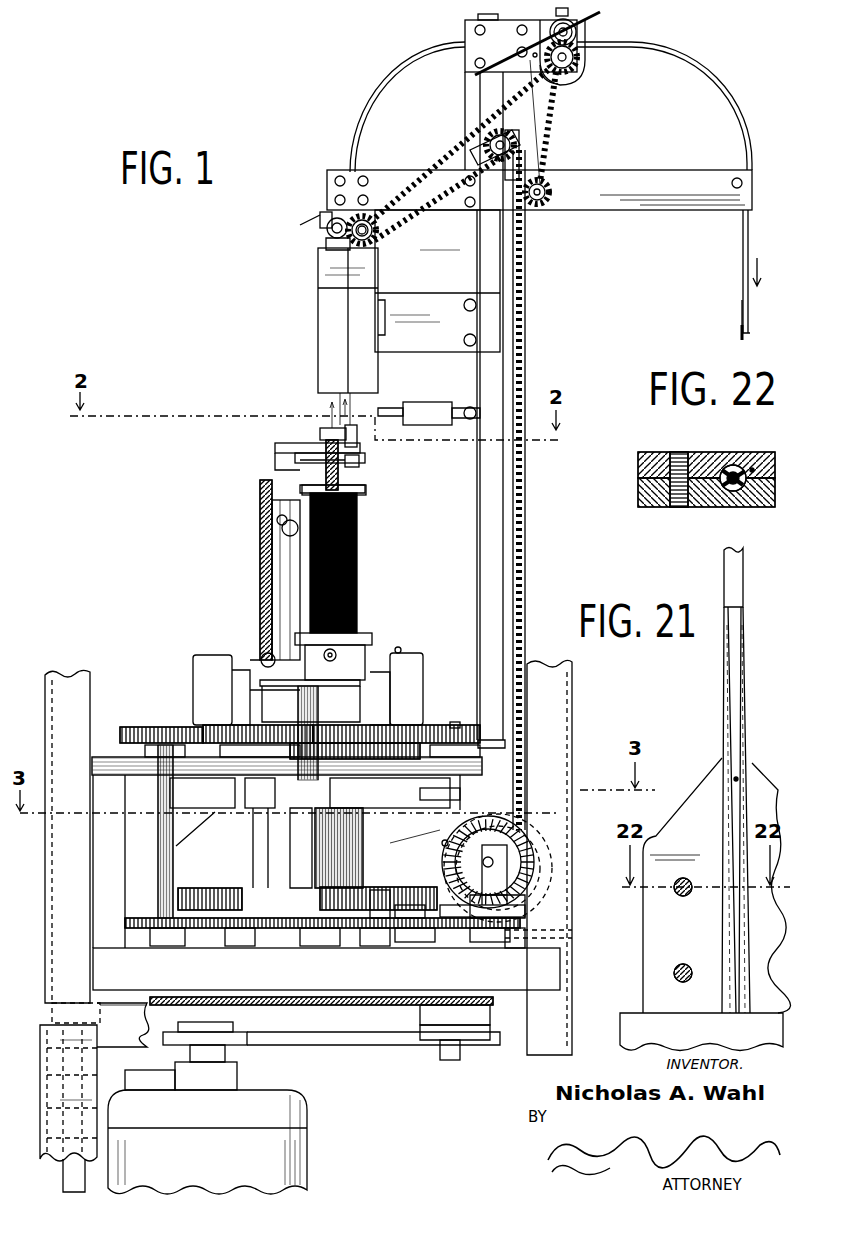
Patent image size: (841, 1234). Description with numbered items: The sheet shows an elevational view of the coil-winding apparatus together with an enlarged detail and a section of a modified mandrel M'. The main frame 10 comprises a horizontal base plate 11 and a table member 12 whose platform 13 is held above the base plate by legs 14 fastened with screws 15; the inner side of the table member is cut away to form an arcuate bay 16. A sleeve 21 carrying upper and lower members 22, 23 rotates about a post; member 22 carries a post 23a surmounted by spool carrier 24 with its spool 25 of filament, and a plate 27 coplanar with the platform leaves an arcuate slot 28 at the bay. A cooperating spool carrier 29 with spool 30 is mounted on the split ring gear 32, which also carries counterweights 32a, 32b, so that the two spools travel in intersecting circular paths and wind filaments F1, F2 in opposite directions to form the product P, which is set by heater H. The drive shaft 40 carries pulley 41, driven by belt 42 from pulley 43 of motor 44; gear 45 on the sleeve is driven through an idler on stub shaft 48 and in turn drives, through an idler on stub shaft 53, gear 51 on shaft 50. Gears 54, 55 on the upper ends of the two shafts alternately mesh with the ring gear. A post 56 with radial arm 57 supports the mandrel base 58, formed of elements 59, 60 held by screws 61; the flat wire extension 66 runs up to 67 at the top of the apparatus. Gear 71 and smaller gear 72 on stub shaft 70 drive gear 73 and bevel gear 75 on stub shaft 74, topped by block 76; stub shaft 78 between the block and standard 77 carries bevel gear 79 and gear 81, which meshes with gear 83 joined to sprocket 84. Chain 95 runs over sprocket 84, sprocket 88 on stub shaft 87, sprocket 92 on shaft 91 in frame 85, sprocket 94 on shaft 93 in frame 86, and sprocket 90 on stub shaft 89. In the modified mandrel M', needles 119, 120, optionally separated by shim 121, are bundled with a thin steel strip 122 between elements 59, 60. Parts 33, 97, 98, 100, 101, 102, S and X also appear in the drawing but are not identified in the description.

In FIG. 1, the main frame 10 is at (80, 911).
In FIG. 1, the base plate 11 is at (362, 984).
In FIG. 1, the table member 12 is at (107, 748).
In FIG. 1, the platform 13 is at (115, 756).
In FIG. 1, the legs 14 is at (106, 848).
In FIG. 1, the screws 15 is at (128, 1010).
In FIG. 1, the arcuate bay 16 is at (418, 792).
In FIG. 1, the sleeve 21 is at (262, 858).
In FIG. 1, the upper member 22 is at (205, 812).
In FIG. 1, the lower member 23 is at (212, 895).
In FIG. 1, the post 23a is at (304, 812).
In FIG. 1, the spool carrier 24 is at (350, 676).
In FIG. 1, the spool of filament 25 is at (357, 579).
In FIG. 1, the plate 27 is at (269, 784).
In FIG. 1, the arcuate slot 28 is at (206, 784).
In FIG. 1, the cooperating spool carrier 29 is at (257, 651).
In FIG. 1, the spool 30 is at (357, 560).
In FIG. 1, the split ring gear 32 is at (252, 738).
In FIG. 1, the counterweight 32a is at (404, 668).
In FIG. 1, the counterweight 32b is at (210, 668).
In FIG. 1, the gear 33 is at (426, 727).
In FIG. 1, the drive shaft 40 is at (440, 725).
In FIG. 1, the pulley 41 is at (430, 1040).
In FIG. 1, the belt 42 is at (322, 1045).
In FIG. 1, the pulley 43 is at (248, 1042).
In FIG. 1, the motor 44 is at (290, 1150).
In FIG. 1, the gear 45 is at (332, 948).
In FIG. 1, the stub shaft 48 is at (372, 942).
In FIG. 1, the shaft 50 is at (168, 727).
In FIG. 1, the gear 51 is at (158, 924).
In FIG. 1, the stub shaft 53 is at (250, 950).
In FIG. 1, the gear 54 is at (452, 722).
In FIG. 1, the gear 55 is at (156, 740).
In FIG. 1, the post 56 is at (305, 432).
In FIG. 1, the radial arm 57 is at (360, 452).
In FIG. 21, the radial arm 57 is at (645, 1036).
In FIG. 1, the mandrel base 58 is at (366, 435).
In FIG. 22, the base element 59 is at (660, 468).
In FIG. 21, the base element 59 is at (668, 934).
In FIG. 22, the base element 60 is at (652, 505).
In FIG. 22, the screws 61 is at (680, 507).
In FIG. 21, the screws 61 is at (690, 965).
In FIG. 1, the flat wire extension 66 is at (745, 308).
In FIG. 1, the upper end of wire extension 67 is at (745, 333).
In FIG. 1, the stub shaft 70 is at (400, 905).
In FIG. 1, the gear 71 is at (378, 890).
In FIG. 1, the smaller gear 72 is at (405, 946).
In FIG. 1, the gear 73 is at (520, 940).
In FIG. 1, the stub shaft 74 is at (486, 946).
In FIG. 1, the bevel gear 75 is at (530, 912).
In FIG. 1, the block 76 is at (520, 882).
In FIG. 1, the standard 77 is at (482, 95).
In FIG. 1, the stub shaft 78 is at (520, 860).
In FIG. 1, the bevel gear 79 is at (446, 872).
In FIG. 1, the gear 81 is at (480, 878).
In FIG. 1, the gear 83 is at (560, 802).
In FIG. 1, the sprocket 84 is at (560, 822).
In FIG. 1, the frame 85 is at (629, 169).
In FIG. 1, the frame 86 is at (471, 30).
In FIG. 1, the stub shaft 87 is at (505, 142).
In FIG. 1, the sprocket 88 is at (497, 172).
In FIG. 1, the stub shaft 89 is at (544, 182).
In FIG. 1, the sprocket 90 is at (550, 190).
In FIG. 1, the shaft 91 is at (368, 243).
In FIG. 1, the sprocket 92 is at (378, 232).
In FIG. 1, the shaft 93 is at (568, 60).
In FIG. 1, the sprocket 94 is at (556, 78).
In FIG. 1, the chain 95 is at (440, 152).
In FIG. 1, the pulley 97 is at (330, 242).
In FIG. 1, the pulley 98 is at (325, 230).
In FIG. 1, the bolt 100 is at (566, 26).
In FIG. 1, the washer 101 is at (572, 39).
In FIG. 1, the guard arc 102 is at (386, 86).
In FIG. 22, the needle 119 is at (725, 498).
In FIG. 21, the needle 119 is at (727, 698).
In FIG. 22, the needle 120 is at (752, 500).
In FIG. 21, the needle 120 is at (745, 690).
In FIG. 22, the shim 121 is at (736, 490).
In FIG. 21, the shim 121 is at (736, 778).
In FIG. 22, the thin strip 122 is at (739, 470).
In FIG. 21, the thin strip 122 is at (734, 578).
In FIG. 1, the heater H is at (308, 331).
In FIG. 1, the solenoid S is at (440, 394).
In FIG. 1, the product P is at (330, 258).
In FIG. 1, the coil-forming filament F1 is at (320, 430).
In FIG. 1, the coil-forming filament F2 is at (333, 430).
In FIG. 1, the axis X is at (406, 842).
In FIG. 22, the composite mandrel M' is at (768, 448).
In FIG. 21, the composite mandrel M' is at (699, 667).